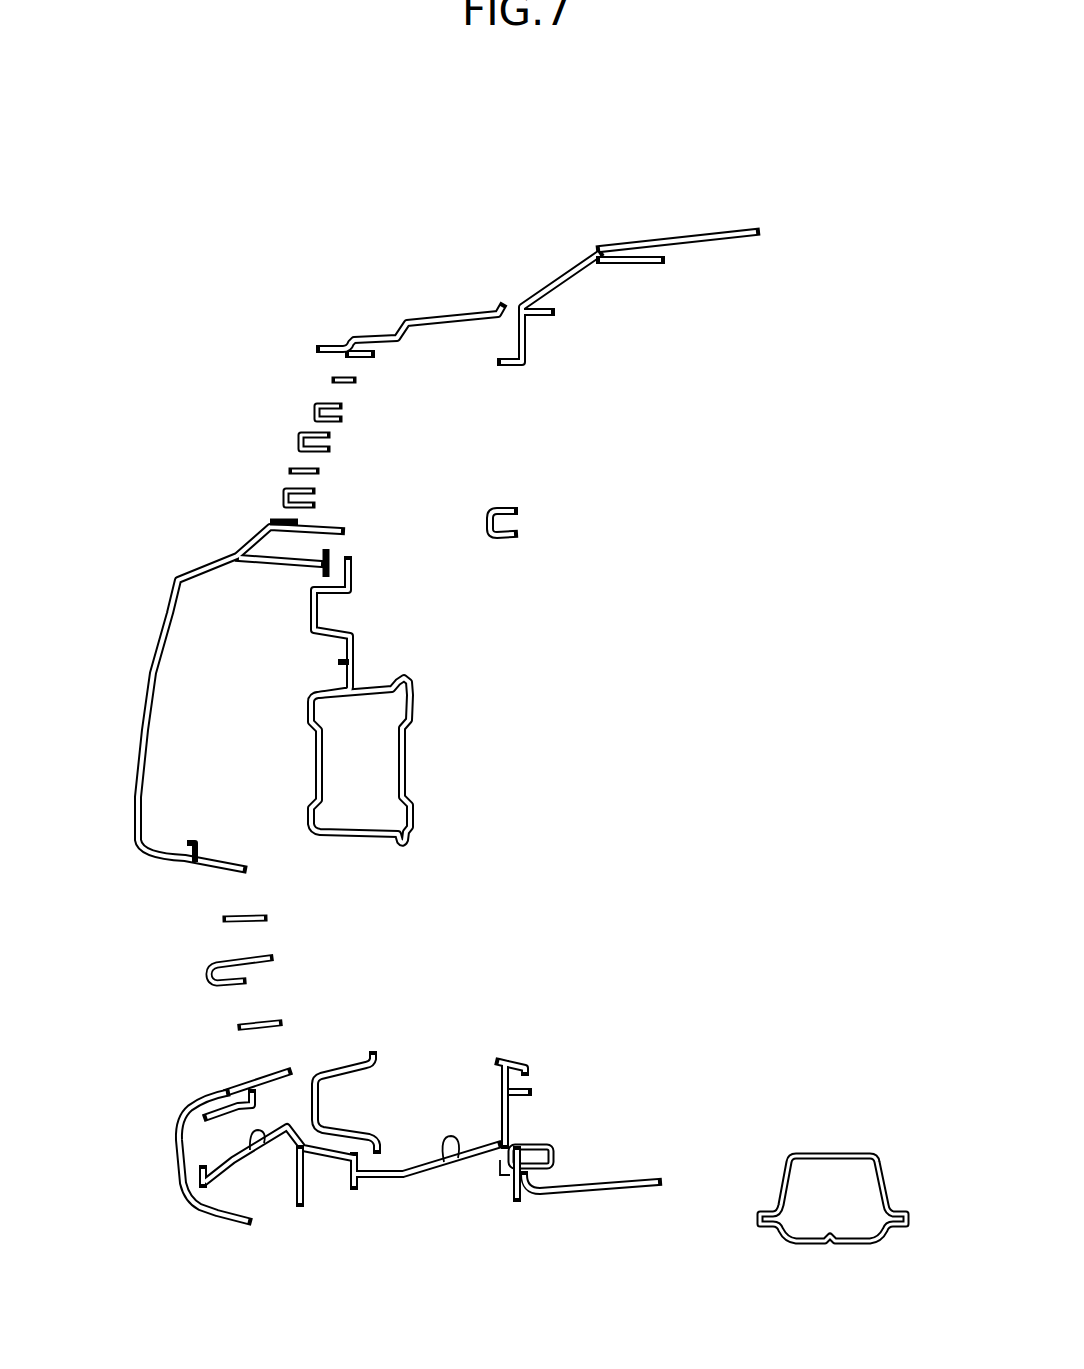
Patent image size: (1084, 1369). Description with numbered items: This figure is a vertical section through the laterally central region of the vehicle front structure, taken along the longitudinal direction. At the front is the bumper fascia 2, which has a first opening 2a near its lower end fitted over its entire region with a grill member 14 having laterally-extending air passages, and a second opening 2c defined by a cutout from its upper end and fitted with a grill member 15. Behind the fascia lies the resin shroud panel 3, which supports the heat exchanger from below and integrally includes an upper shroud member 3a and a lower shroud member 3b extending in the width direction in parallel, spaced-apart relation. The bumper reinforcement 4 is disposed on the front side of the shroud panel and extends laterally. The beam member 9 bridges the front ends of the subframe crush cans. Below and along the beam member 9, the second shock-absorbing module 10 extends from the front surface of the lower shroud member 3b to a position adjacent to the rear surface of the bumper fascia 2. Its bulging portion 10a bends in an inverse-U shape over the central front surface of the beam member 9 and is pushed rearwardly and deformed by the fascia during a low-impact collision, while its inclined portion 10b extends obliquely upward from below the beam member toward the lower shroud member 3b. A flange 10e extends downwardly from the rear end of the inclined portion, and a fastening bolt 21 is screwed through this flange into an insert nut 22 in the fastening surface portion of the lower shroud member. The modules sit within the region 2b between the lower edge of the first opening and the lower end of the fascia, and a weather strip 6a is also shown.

The bumper fascia 2 is at (150, 677).
The first opening 2a is at (244, 1059).
The region between lower edge of first opening and lower end of bumper fascia 2b is at (180, 1163).
The second opening 2c is at (338, 364).
The resin shroud panel 3 is at (759, 219).
The upper shroud member 3a is at (594, 251).
The lower shroud member 3b is at (585, 1194).
The bumper reinforcement 4 is at (316, 758).
The weather strip 6a is at (845, 1245).
The beam member 9 is at (335, 1139).
The second shock-absorbing module 10 is at (243, 1170).
The bulging portion 10a is at (270, 1139).
The inclined portion 10b is at (455, 1149).
The flange 10e is at (499, 1116).
The grill member 14 is at (172, 868).
The grill member 15 is at (288, 365).
The fastening bolt 21 is at (499, 1160).
The insert nut 22 is at (545, 1142).